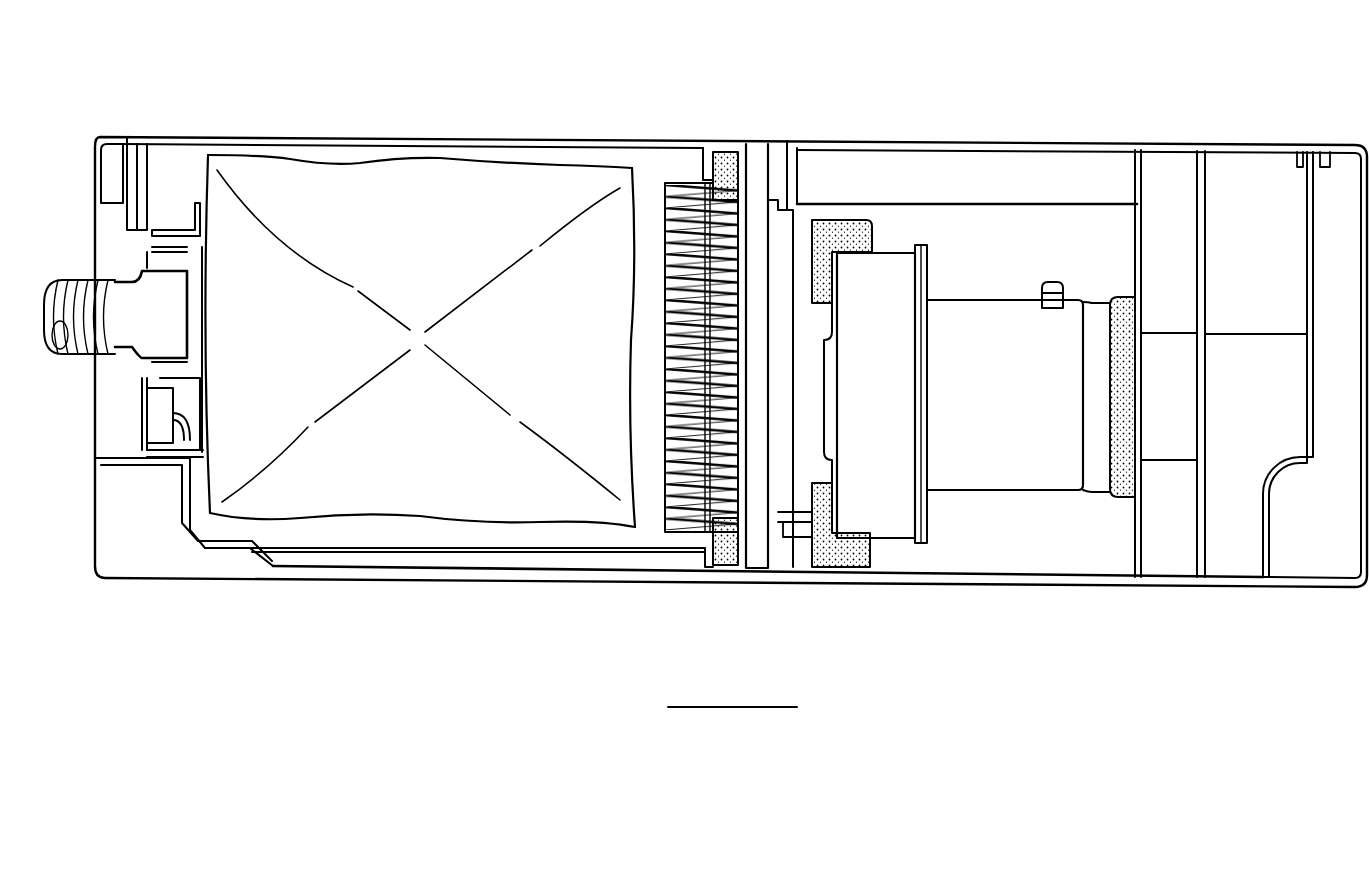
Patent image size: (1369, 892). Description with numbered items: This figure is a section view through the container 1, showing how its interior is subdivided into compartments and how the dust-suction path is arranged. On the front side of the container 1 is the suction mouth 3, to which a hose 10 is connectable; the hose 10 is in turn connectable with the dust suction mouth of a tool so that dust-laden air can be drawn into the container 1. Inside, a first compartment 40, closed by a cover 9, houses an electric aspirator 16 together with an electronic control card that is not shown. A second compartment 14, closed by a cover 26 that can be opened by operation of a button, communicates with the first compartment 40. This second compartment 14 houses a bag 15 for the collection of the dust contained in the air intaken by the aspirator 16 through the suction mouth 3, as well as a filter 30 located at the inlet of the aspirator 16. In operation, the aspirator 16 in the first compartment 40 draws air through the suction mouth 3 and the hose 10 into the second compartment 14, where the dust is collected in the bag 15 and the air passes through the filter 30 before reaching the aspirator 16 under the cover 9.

The container 1 is at (895, 112).
The suction mouth 3 is at (197, 307).
The cover 9 is at (1050, 146).
The hose 10 is at (65, 275).
The second compartment 14 is at (393, 548).
The bag 15 is at (342, 165).
The electric aspirator 16 is at (1045, 470).
The cover 26 is at (656, 147).
The filter 30 is at (685, 522).
The first compartment 40 is at (1017, 258).